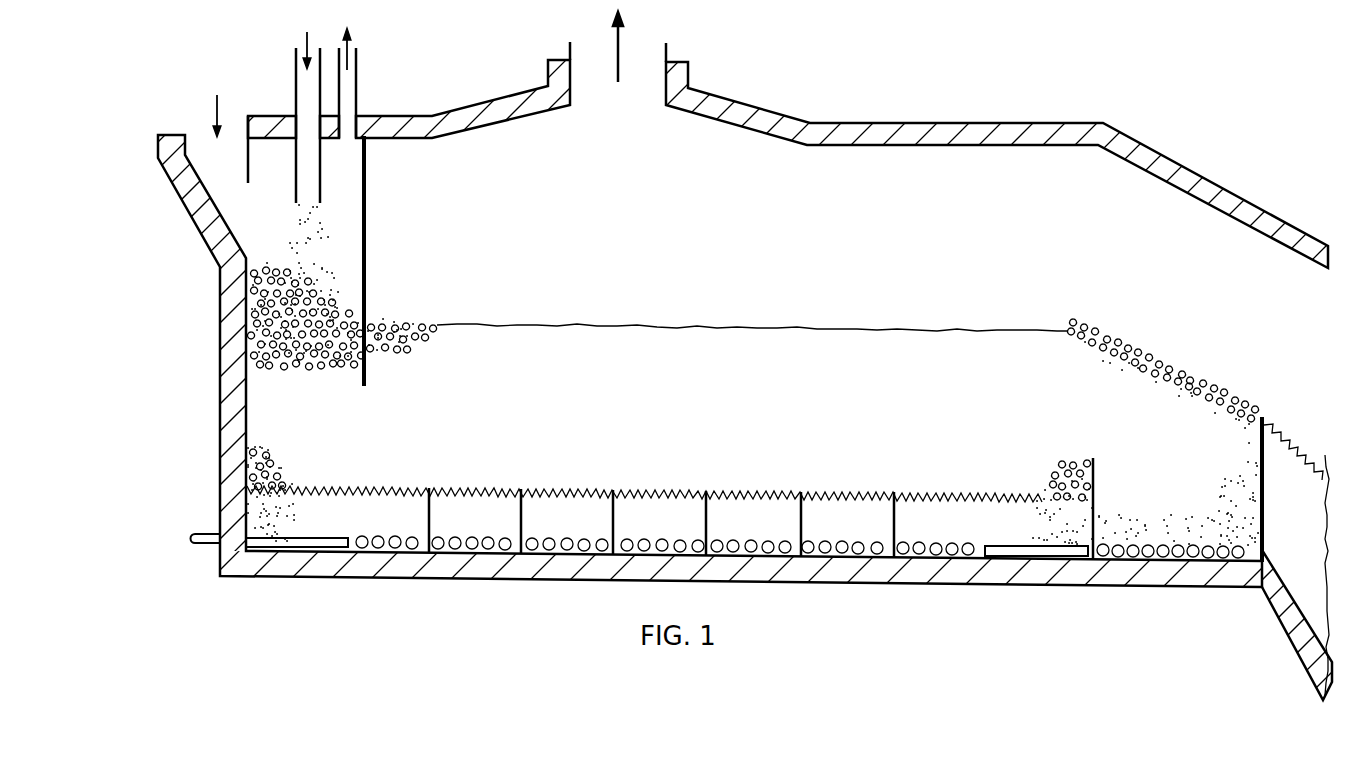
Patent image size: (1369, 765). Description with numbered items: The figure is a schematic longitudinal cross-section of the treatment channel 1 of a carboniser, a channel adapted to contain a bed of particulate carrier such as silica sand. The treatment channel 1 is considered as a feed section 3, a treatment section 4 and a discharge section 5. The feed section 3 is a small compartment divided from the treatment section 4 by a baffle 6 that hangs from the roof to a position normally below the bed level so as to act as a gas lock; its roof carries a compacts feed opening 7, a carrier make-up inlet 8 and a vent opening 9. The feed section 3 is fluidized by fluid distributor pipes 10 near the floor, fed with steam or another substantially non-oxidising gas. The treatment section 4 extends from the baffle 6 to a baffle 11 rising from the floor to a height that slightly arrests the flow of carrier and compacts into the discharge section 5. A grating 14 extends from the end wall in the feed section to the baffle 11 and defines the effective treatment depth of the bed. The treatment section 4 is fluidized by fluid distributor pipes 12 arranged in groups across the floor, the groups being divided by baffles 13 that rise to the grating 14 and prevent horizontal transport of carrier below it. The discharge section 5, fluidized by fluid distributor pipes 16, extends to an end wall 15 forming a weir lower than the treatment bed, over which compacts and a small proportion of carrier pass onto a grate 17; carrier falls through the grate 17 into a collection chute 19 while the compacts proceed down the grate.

The treatment channel 1 is at (222, 393).
The feed section 3 is at (310, 399).
The treatment section 4 is at (716, 407).
The discharge section 5 is at (1166, 482).
The baffle 6 is at (366, 249).
The compacts feed opening 7 is at (196, 118).
The carrier make-up inlet 8 is at (296, 92).
The vent opening 9 is at (357, 96).
The fluid distributor pipes 10 is at (347, 549).
The baffle 11 is at (1096, 489).
The fluid distributor pipes 12 is at (491, 549).
The baffles 13 is at (518, 512).
The grating 14 is at (403, 486).
The end wall 15 is at (1265, 428).
The fluid distributor pipes 16 is at (1183, 558).
The grate 17 is at (1324, 455).
The collection chute 19 is at (1283, 612).